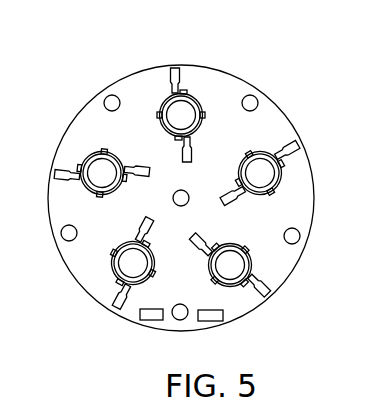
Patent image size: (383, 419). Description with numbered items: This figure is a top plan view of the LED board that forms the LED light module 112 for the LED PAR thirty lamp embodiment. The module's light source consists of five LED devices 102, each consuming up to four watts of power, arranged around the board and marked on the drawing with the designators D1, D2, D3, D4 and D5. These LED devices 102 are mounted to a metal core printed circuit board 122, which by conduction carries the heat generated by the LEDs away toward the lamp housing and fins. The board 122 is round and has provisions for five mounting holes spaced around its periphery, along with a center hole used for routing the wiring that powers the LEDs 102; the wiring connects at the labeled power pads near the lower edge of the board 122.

The LED device 102 is at (284, 142).
The LED light module 112 is at (79, 62).
The metal core printed circuit board 122 is at (80, 285).
The LED D1 is at (230, 265).
The LED D2 is at (259, 173).
The LED D3 is at (193, 115).
The LED D4 is at (102, 164).
The LED D5 is at (133, 263).